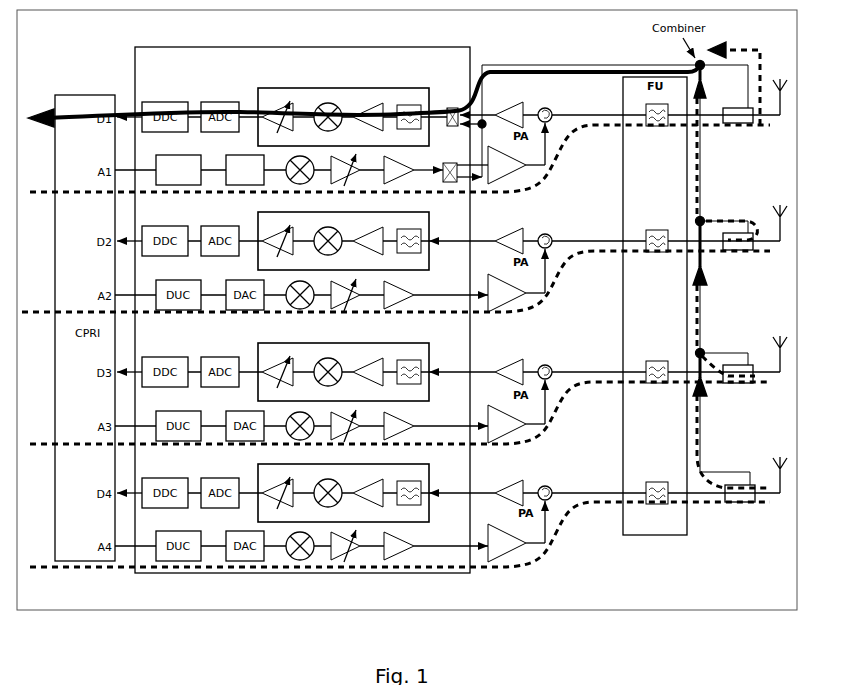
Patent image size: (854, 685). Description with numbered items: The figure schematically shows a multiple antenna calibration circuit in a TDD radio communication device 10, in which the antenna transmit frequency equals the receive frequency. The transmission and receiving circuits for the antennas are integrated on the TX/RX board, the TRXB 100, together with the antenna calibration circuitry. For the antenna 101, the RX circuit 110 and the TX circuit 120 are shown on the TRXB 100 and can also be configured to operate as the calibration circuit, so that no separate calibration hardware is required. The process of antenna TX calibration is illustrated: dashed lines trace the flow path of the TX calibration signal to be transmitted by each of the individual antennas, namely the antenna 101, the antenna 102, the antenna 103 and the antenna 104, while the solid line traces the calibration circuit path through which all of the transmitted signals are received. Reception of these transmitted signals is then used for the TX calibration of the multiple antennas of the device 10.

The TDD radio communication device 10 is at (407, 310).
The TRXB 100 is at (302, 310).
The RX circuit 110 is at (352, 110).
The TX circuit 120 is at (330, 179).
The antenna 101 is at (758, 115).
The antenna 102 is at (755, 236).
The antenna 103 is at (758, 371).
The antenna 104 is at (750, 488).